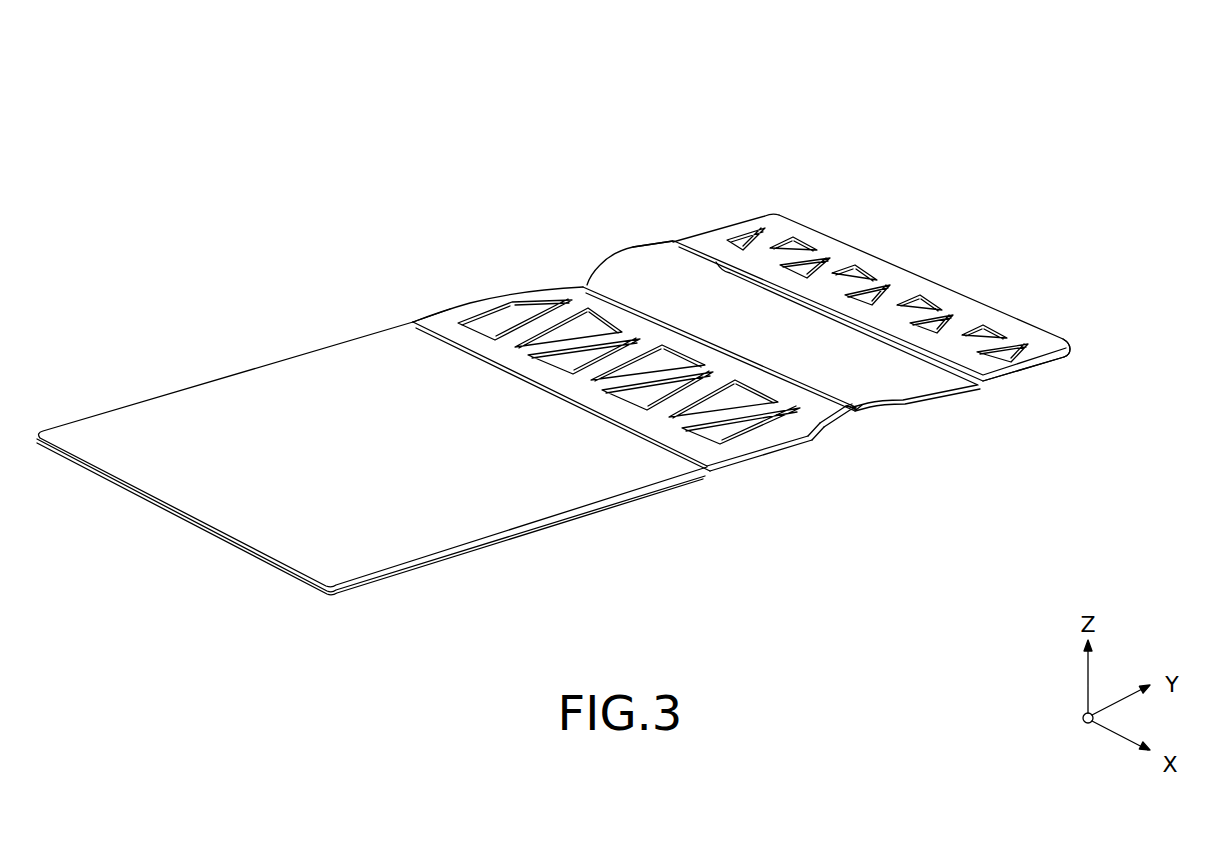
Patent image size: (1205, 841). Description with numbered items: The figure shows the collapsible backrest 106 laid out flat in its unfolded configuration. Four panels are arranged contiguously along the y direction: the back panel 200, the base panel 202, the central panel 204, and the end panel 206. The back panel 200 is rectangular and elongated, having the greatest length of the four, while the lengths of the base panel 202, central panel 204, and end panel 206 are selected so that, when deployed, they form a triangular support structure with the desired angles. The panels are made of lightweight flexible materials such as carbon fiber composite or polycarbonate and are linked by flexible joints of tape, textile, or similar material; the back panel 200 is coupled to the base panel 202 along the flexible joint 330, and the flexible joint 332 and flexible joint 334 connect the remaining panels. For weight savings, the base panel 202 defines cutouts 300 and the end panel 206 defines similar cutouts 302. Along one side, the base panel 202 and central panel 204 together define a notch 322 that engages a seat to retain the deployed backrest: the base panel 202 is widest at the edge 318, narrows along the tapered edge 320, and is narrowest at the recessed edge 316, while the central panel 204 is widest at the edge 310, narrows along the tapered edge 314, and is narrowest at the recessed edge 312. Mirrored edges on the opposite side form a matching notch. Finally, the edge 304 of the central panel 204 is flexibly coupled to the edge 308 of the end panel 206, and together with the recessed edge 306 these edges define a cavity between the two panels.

The collapsible backrest 106 is at (793, 128).
The back panel 200 is at (540, 505).
The base panel 202 is at (663, 437).
The central panel 204 is at (640, 258).
The end panel 206 is at (1055, 345).
The cutouts 300 is at (727, 437).
The cutouts 302 is at (943, 318).
The edge of central panel 304 is at (700, 243).
The recessed edge of central panel 306 is at (758, 285).
The edge of end panel 308 is at (817, 302).
The edge 310 is at (977, 383).
The recessed edge 312 is at (858, 405).
The tapered edge 314 is at (903, 400).
The recessed edge 316 is at (842, 412).
The edge 318 is at (777, 447).
The tapered edge 320 is at (825, 427).
The notch 322 is at (857, 415).
The flexible joint 330 is at (413, 322).
The flexible joint 332 is at (580, 286).
The flexible joint 334 is at (670, 240).